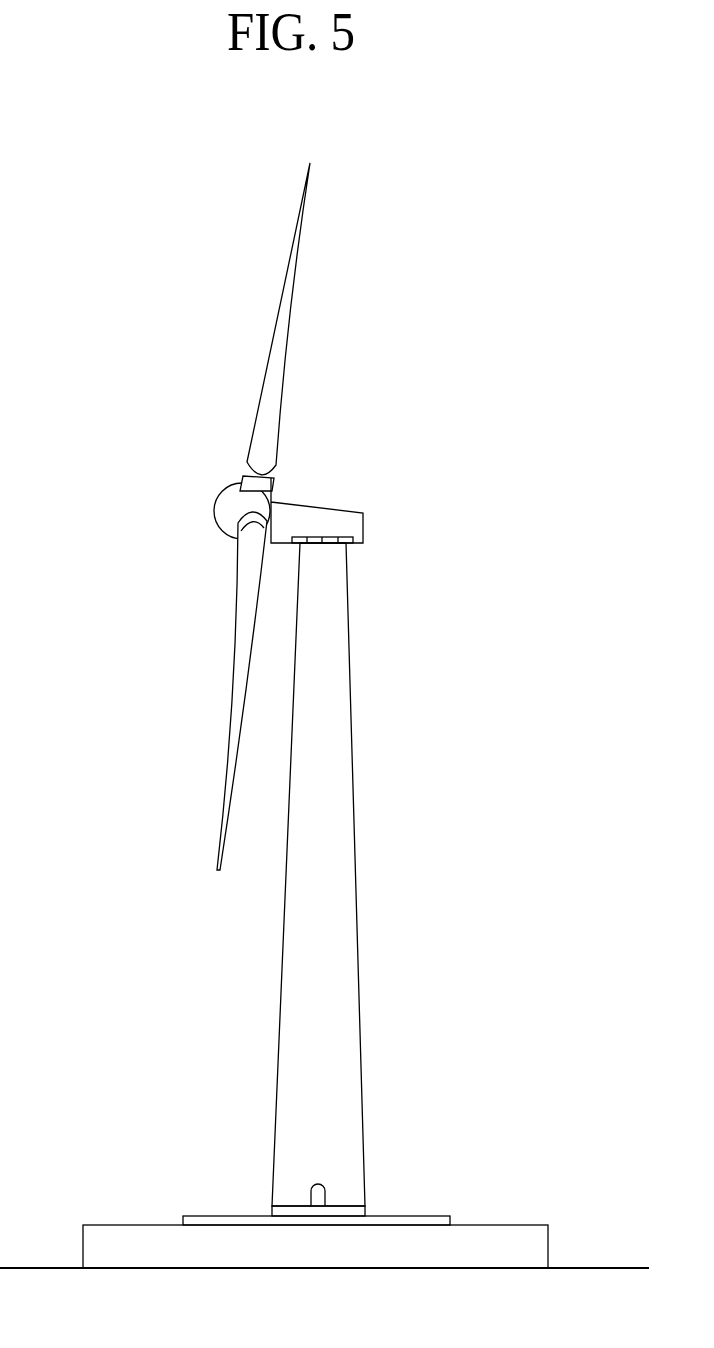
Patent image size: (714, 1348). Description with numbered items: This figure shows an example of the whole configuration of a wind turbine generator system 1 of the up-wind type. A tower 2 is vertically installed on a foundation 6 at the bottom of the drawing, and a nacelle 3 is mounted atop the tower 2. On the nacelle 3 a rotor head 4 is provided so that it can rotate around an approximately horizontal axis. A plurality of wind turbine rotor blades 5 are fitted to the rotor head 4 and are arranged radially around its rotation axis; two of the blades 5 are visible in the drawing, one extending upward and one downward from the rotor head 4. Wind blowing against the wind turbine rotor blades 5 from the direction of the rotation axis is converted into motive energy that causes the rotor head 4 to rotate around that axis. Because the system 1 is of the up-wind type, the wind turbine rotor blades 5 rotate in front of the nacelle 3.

The wind turbine generator system 1 is at (472, 247).
The tower 2 is at (352, 735).
The nacelle 3 is at (350, 455).
The rotor head 4 is at (216, 510).
The wind turbine rotor blades 5 is at (299, 265).
The foundation 6 is at (532, 1232).